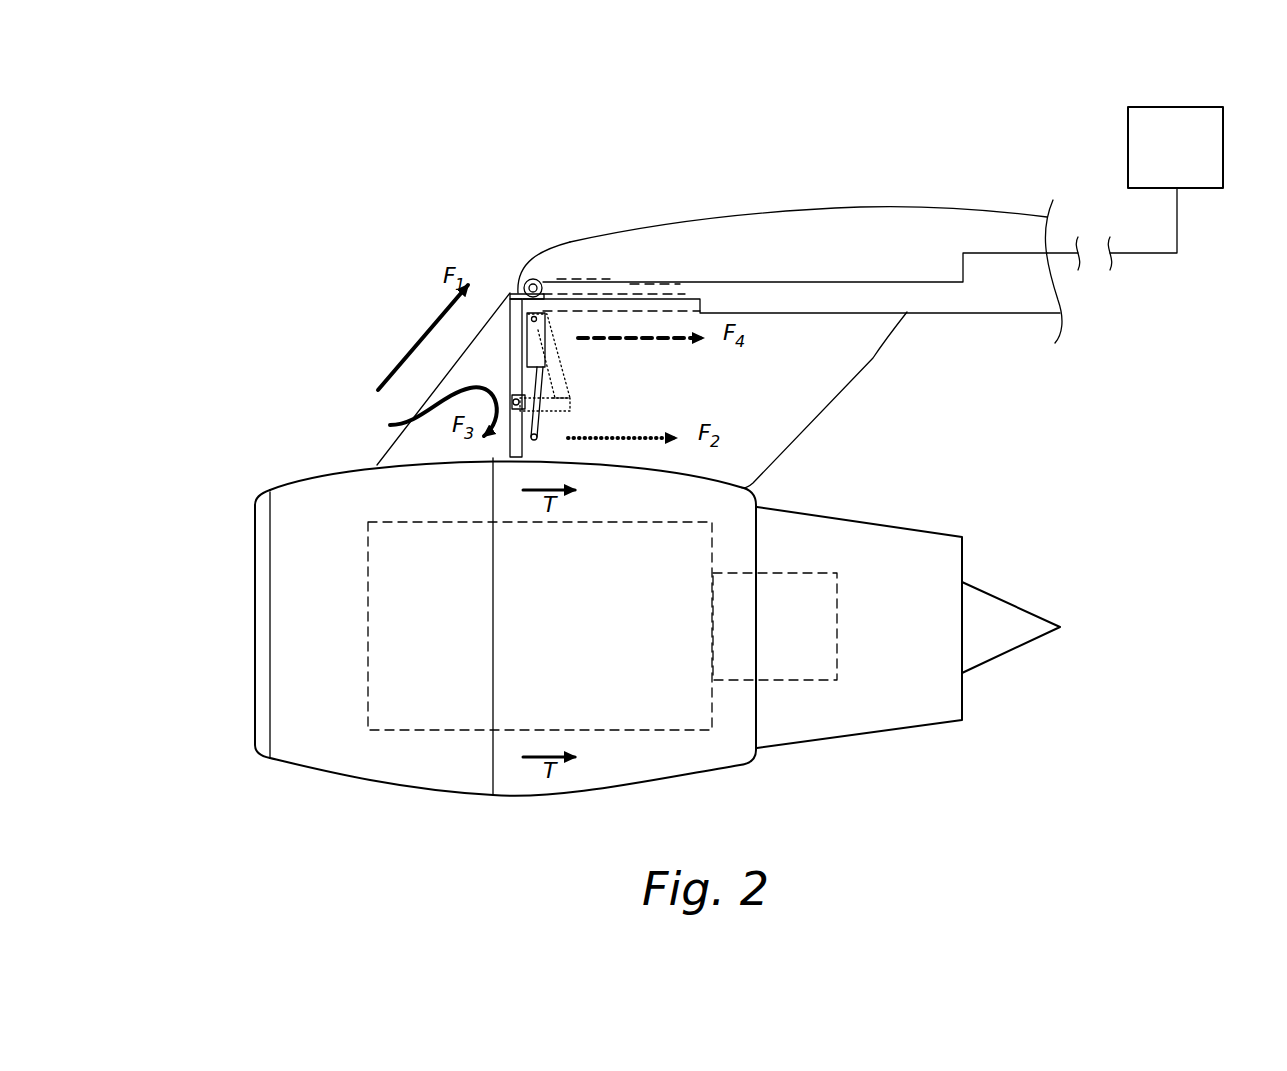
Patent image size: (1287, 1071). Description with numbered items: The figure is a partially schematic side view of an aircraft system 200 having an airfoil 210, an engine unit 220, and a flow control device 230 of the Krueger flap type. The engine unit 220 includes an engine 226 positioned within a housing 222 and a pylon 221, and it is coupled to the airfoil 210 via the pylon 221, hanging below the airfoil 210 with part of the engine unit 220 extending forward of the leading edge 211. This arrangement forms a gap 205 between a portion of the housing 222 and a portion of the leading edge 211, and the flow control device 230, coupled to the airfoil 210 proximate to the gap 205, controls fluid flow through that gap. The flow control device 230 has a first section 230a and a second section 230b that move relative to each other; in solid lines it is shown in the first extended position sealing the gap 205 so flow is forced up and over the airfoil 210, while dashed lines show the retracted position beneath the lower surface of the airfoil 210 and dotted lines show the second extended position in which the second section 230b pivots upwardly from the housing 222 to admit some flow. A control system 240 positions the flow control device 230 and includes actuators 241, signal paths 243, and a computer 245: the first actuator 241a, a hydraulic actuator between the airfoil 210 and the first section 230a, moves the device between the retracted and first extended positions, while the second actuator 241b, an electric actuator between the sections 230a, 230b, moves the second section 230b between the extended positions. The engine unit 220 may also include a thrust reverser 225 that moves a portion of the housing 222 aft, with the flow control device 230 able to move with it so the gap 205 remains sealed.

The aircraft system 200 is at (645, 166).
The gap 205 is at (398, 446).
The airfoil 210 is at (837, 207).
The leading edge 211 is at (515, 285).
The engine unit 220 is at (476, 820).
The pylon 221 is at (462, 355).
The housing 222 is at (312, 747).
The thrust reverser 225 is at (513, 653).
The engine 226 is at (387, 660).
The flow control device 230 is at (869, 354).
The first section 230a is at (510, 350).
The second section 230b is at (503, 442).
The control system 240 is at (878, 96).
The actuators 241 is at (752, 422).
The first actuator 241a is at (537, 279).
The second actuator 241b is at (546, 350).
The signal paths 243 is at (992, 253).
The computer 245 is at (1127, 142).